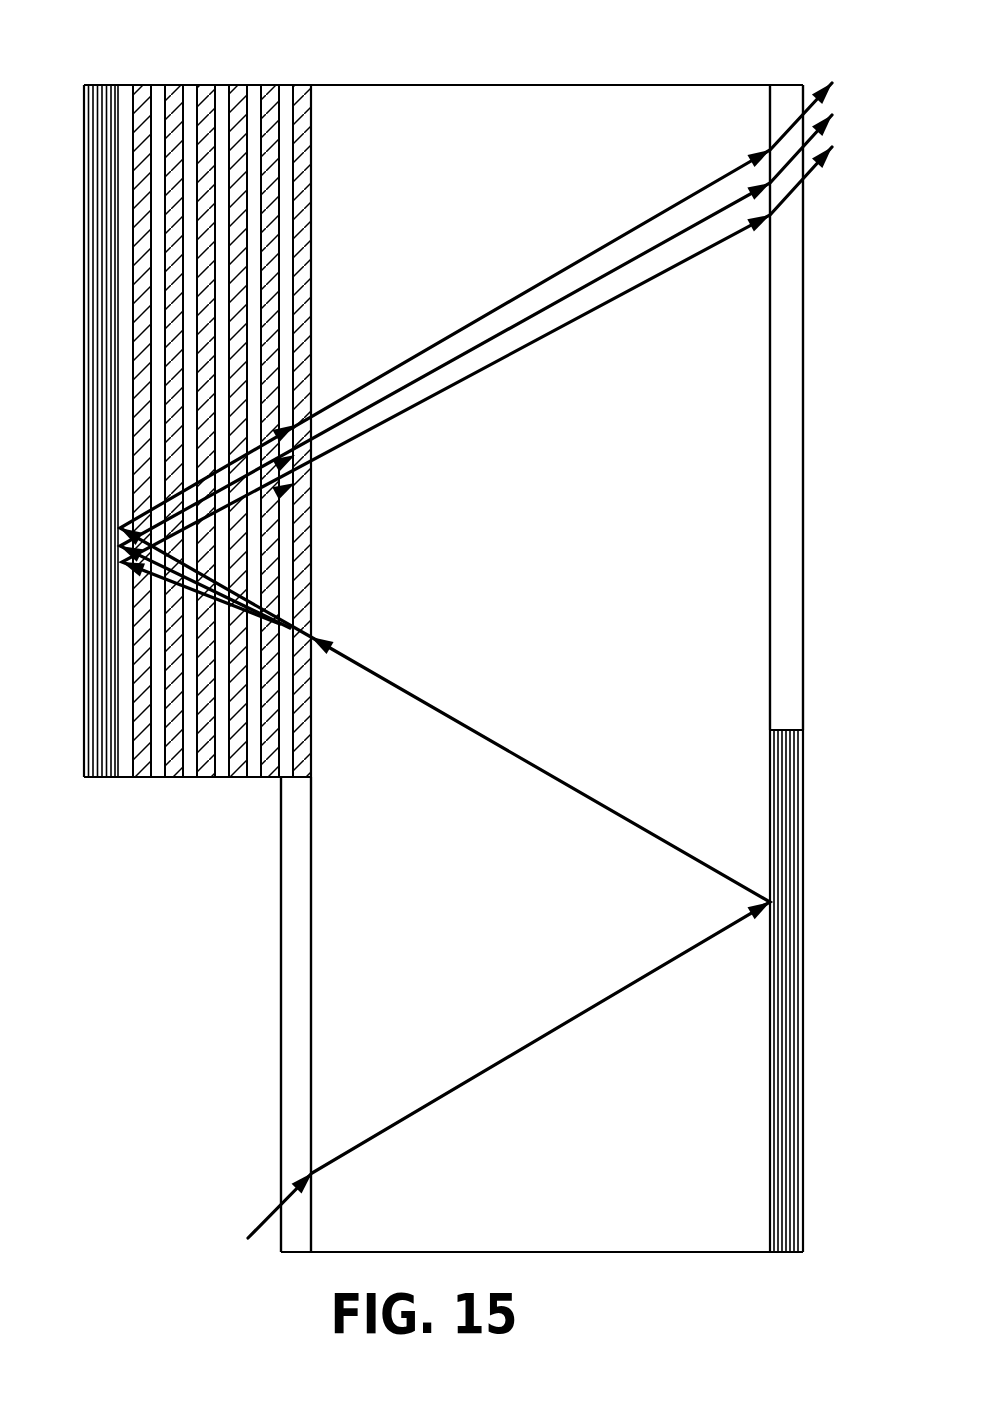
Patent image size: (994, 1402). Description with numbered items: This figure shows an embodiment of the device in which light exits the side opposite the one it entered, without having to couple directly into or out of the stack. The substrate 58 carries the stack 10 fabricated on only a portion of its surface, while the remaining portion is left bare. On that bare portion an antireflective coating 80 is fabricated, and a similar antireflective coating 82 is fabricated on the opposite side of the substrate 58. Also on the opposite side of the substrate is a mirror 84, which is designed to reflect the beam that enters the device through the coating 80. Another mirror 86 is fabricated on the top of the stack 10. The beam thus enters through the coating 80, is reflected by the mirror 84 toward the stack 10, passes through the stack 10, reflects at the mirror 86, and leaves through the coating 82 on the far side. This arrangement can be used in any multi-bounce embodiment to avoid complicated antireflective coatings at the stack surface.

The stack 10 is at (115, 68).
The substrate 58 is at (566, 697).
The antireflective coating 80 is at (280, 953).
The antireflective coating 82 is at (803, 667).
The mirror 84 is at (803, 997).
The mirror 86 is at (85, 558).